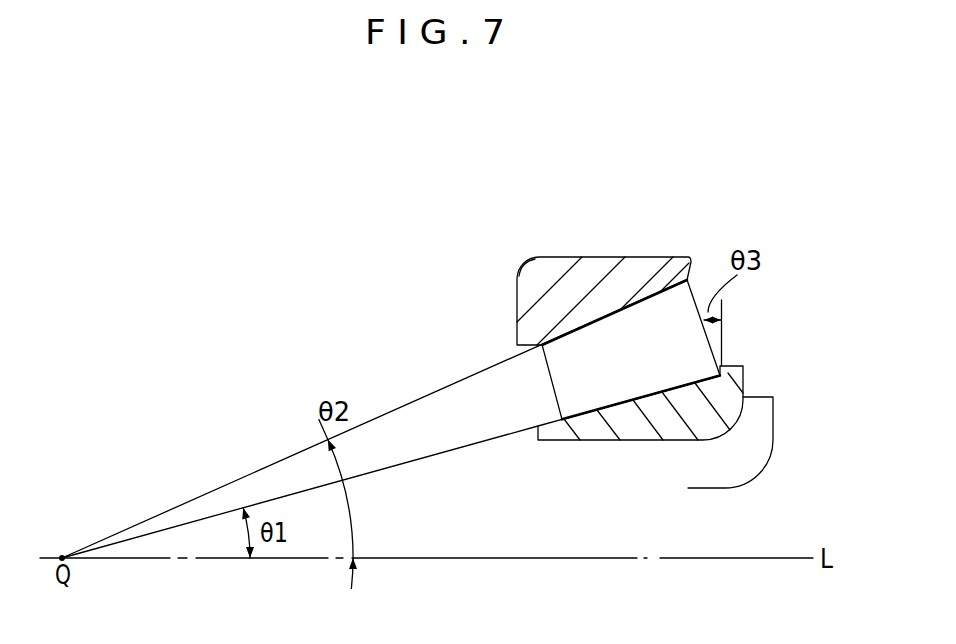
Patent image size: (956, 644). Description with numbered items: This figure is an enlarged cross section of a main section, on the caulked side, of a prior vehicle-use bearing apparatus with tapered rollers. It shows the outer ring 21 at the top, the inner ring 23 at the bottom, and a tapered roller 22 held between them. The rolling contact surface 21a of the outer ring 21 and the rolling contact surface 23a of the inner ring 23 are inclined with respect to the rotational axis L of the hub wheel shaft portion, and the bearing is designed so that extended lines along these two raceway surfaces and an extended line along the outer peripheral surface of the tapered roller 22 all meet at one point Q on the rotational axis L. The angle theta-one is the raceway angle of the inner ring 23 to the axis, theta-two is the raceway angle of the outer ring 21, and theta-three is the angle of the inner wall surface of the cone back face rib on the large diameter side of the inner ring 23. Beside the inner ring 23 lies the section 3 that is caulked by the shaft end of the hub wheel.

The outer ring 21 is at (593, 267).
The rolling contact surface of the outer ring 21a is at (637, 298).
The tapered roller 22 is at (595, 362).
The inner ring 23 is at (738, 375).
The rolling contact surface of the inner ring 23a is at (616, 405).
The caulked section 3 is at (765, 444).